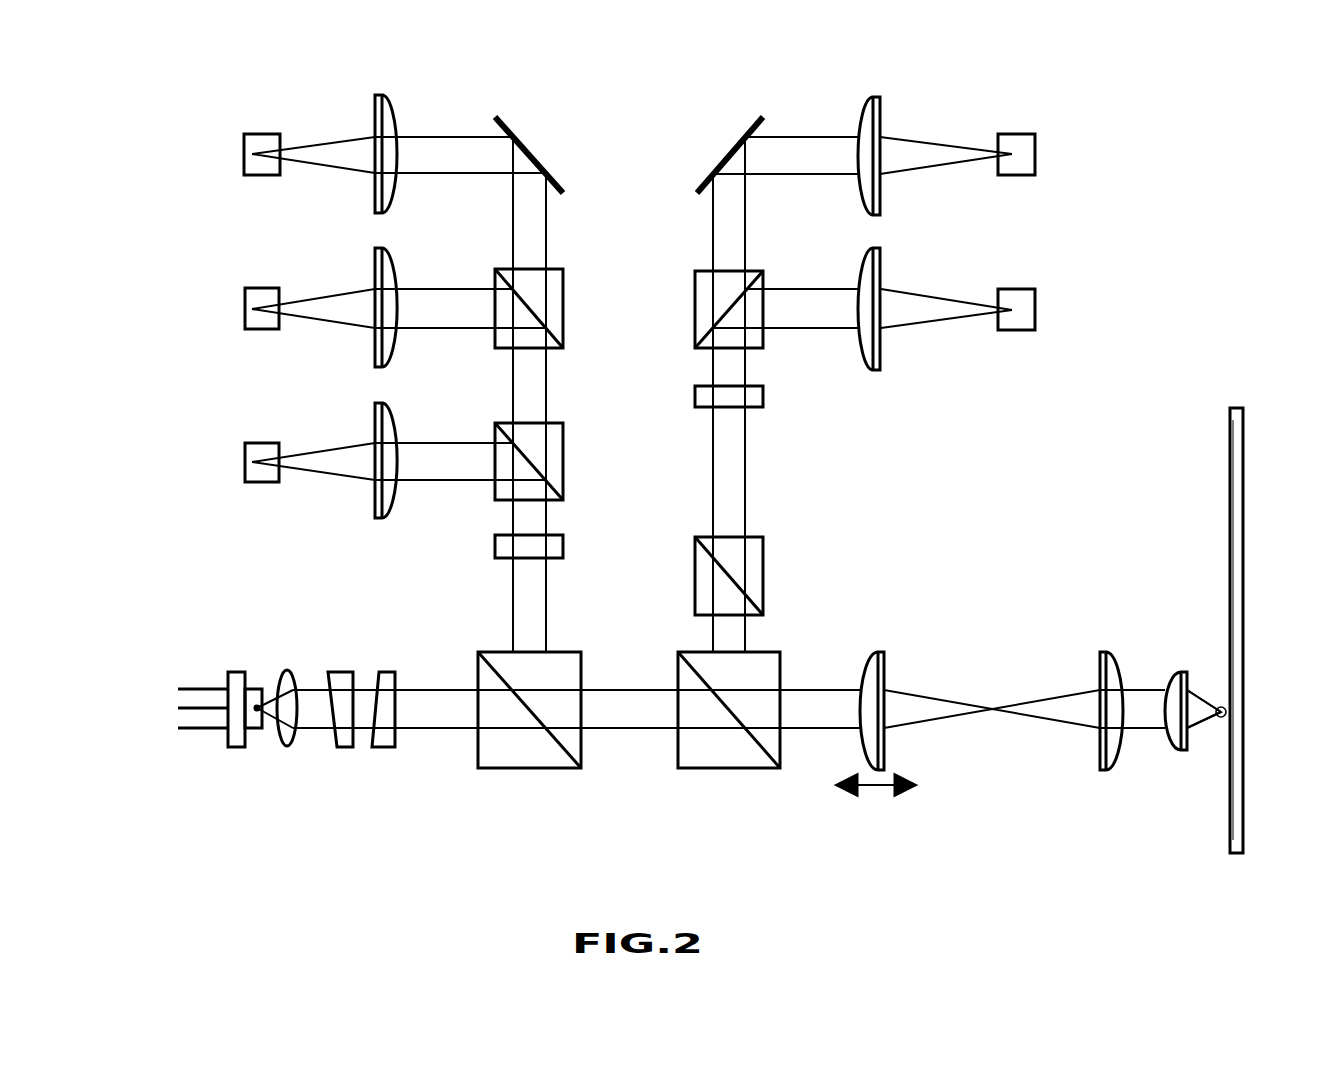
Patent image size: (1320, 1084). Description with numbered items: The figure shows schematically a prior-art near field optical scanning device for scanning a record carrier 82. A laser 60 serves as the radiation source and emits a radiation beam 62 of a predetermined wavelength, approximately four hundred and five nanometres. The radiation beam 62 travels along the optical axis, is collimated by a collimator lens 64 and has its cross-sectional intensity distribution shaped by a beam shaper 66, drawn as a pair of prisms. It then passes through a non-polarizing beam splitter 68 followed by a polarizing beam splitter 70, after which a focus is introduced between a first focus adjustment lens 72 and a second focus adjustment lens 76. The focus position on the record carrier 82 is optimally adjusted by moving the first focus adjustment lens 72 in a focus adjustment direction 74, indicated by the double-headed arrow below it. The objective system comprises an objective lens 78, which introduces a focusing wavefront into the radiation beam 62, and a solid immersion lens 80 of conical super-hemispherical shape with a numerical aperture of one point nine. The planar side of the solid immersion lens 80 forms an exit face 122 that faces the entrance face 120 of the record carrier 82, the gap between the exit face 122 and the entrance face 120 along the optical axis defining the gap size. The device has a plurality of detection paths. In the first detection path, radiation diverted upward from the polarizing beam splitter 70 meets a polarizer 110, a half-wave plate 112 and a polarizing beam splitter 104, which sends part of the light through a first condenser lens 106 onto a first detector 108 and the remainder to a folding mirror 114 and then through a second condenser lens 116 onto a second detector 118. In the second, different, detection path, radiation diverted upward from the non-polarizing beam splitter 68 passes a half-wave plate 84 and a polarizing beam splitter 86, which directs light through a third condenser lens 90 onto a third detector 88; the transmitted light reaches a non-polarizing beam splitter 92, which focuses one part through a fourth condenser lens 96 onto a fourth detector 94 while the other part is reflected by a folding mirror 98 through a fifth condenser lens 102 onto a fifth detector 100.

The laser 60 is at (238, 749).
The radiation beam 62 is at (275, 705).
The collimator lens 64 is at (285, 748).
The beam shaper 66 is at (387, 750).
The non-polarizing beam splitter 68 is at (533, 768).
The polarizing beam splitter 70 is at (727, 768).
The first focus adjustment lens 72 is at (878, 652).
The focus adjustment direction 74 is at (878, 790).
The second focus adjustment lens 76 is at (1100, 650).
The objective lens 78 is at (1168, 672).
The solid immersion lens 80 is at (1215, 692).
The record carrier 82 is at (1237, 410).
The half-wave plate 84 is at (495, 548).
The polarizing beam splitter 86 is at (565, 422).
The third detector 88 is at (245, 462).
The third condenser lens 90 is at (375, 520).
The non-polarizing beam splitter 92 is at (565, 292).
The fourth detector 94 is at (245, 310).
The fourth condenser lens 96 is at (375, 360).
The folding mirror 98 is at (514, 121).
The fifth detector 100 is at (244, 154).
The fifth condenser lens 102 is at (375, 190).
The polarizing beam splitter 104 is at (695, 272).
The first condenser lens 106 is at (881, 274).
The first detector 108 is at (1037, 314).
The polarizer 110 is at (765, 539).
The half-wave plate 112 is at (765, 402).
The folding mirror 114 is at (732, 150).
The second condenser lens 116 is at (858, 107).
The second detector 118 is at (1037, 155).
The entrance face 120 is at (1230, 478).
The exit face 122 is at (1222, 720).